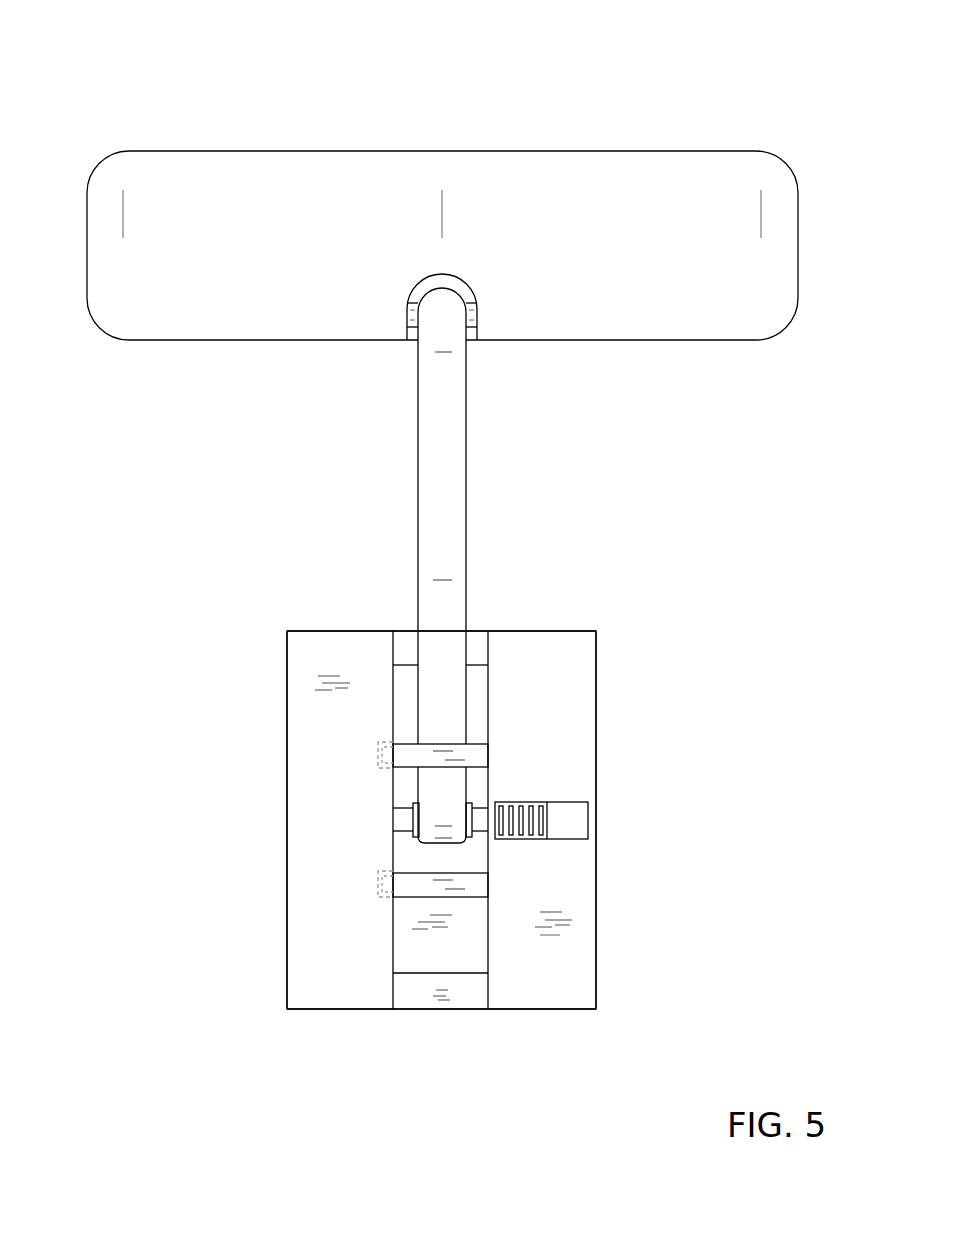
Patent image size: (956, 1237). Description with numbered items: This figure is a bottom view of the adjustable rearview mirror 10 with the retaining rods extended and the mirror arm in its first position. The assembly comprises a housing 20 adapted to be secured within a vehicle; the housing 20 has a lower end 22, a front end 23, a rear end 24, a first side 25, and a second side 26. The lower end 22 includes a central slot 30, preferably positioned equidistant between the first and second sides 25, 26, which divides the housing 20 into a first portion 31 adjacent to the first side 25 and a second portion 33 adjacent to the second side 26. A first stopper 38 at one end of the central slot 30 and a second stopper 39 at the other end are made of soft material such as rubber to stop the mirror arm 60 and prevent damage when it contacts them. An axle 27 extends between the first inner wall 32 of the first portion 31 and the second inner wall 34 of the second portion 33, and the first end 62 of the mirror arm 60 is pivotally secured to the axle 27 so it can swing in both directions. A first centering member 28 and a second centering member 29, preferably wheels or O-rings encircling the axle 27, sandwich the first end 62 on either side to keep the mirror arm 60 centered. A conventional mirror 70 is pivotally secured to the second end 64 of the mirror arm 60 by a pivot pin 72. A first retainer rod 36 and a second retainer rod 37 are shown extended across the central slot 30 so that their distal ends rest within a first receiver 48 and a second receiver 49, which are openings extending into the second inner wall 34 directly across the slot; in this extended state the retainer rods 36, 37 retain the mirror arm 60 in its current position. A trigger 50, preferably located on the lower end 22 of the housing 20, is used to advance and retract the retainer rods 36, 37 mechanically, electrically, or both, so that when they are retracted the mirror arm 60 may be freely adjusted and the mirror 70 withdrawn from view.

The adjustable rearview mirror 10 is at (160, 88).
The mirror 70 is at (412, 150).
The first end 62 is at (440, 286).
The pivot pin 72 is at (471, 325).
The mirror arm 60 is at (466, 450).
The second end 64 is at (440, 845).
The second centering member 29 is at (410, 822).
The housing 20 is at (287, 827).
The rear end 24 is at (328, 631).
The front end 23 is at (547, 1010).
The first side 25 is at (597, 922).
The second side 26 is at (287, 950).
The second inner wall 34 is at (395, 710).
The first inner wall 32 is at (487, 708).
The second stopper 39 is at (478, 631).
The second portion 33 is at (320, 733).
The lower end 22 is at (551, 715).
The first retainer rod 36 is at (489, 754).
The second retainer rod 37 is at (470, 887).
The first receiver 48 is at (377, 755).
The second receiver 49 is at (377, 885).
The axle 27 is at (413, 803).
The first centering member 28 is at (472, 838).
The trigger 50 is at (527, 802).
The central slot 30 is at (408, 930).
The first stopper 38 is at (418, 998).
The first portion 31 is at (555, 972).